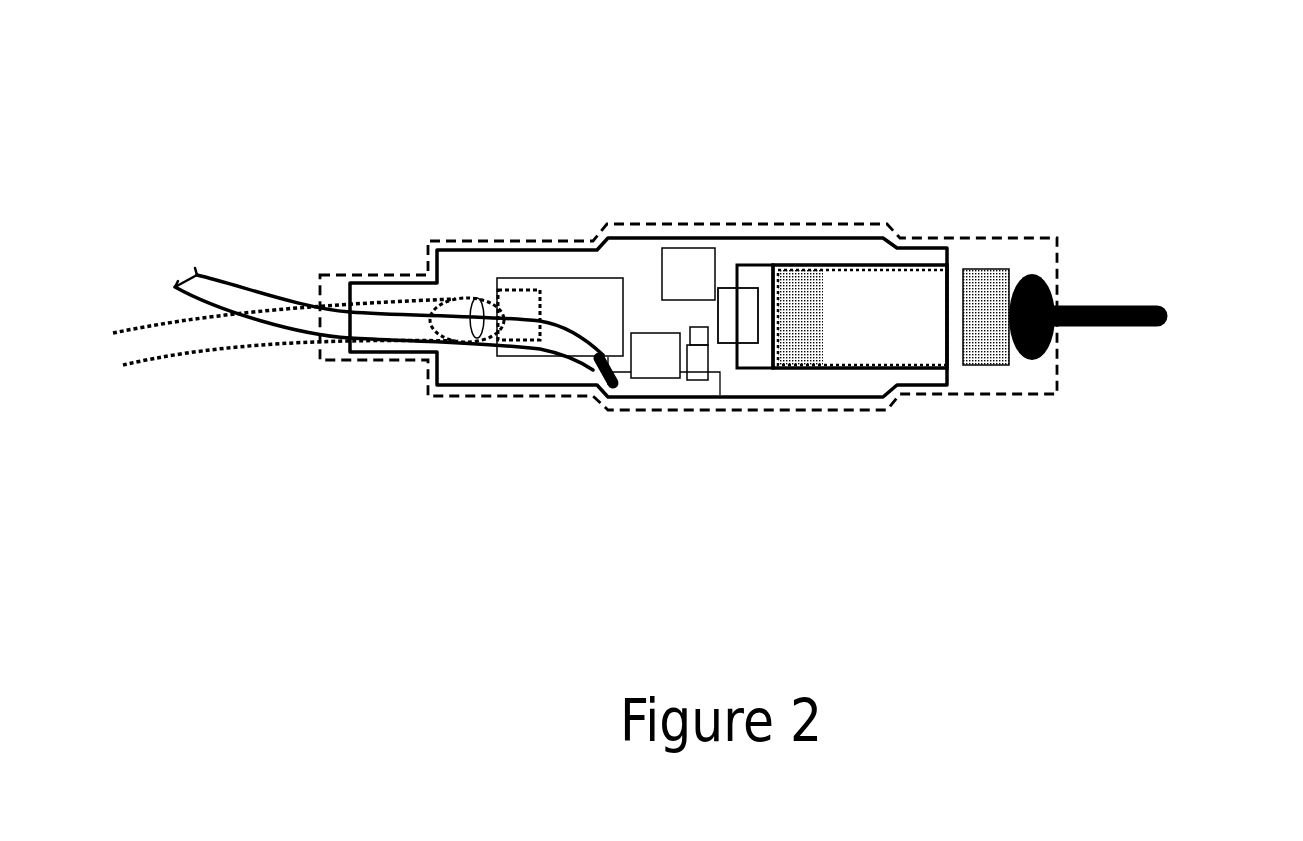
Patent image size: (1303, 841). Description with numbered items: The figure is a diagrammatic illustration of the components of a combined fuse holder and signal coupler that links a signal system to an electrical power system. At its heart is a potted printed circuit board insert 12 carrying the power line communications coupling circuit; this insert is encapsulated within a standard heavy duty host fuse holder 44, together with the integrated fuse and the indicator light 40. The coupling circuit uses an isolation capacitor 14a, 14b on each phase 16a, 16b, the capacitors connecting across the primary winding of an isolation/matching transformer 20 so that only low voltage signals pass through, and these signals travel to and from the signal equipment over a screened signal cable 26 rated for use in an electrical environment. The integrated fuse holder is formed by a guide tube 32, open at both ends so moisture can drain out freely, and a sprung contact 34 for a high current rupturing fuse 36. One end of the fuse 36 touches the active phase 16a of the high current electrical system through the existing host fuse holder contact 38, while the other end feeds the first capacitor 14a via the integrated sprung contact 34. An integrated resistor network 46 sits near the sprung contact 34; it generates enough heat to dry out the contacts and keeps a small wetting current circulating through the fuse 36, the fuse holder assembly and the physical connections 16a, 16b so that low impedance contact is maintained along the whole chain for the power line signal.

The potted printed circuit board insert 12 is at (393, 296).
The isolation capacitor 14a is at (690, 267).
The isolation capacitor 14b is at (655, 342).
The active phase 16a is at (1145, 327).
The phase 16b is at (192, 287).
The isolation/matching transformer 20 is at (565, 292).
The screened signal cable 26 is at (195, 333).
The guide tube 32 is at (863, 373).
The sprung contact 34 is at (750, 337).
The high current rupturing fuse 36 is at (983, 270).
The host fuse holder contact 38 is at (1046, 284).
The indicator light 40 is at (462, 300).
The host fuse holder 44 is at (985, 398).
The resistor network 46 is at (695, 363).